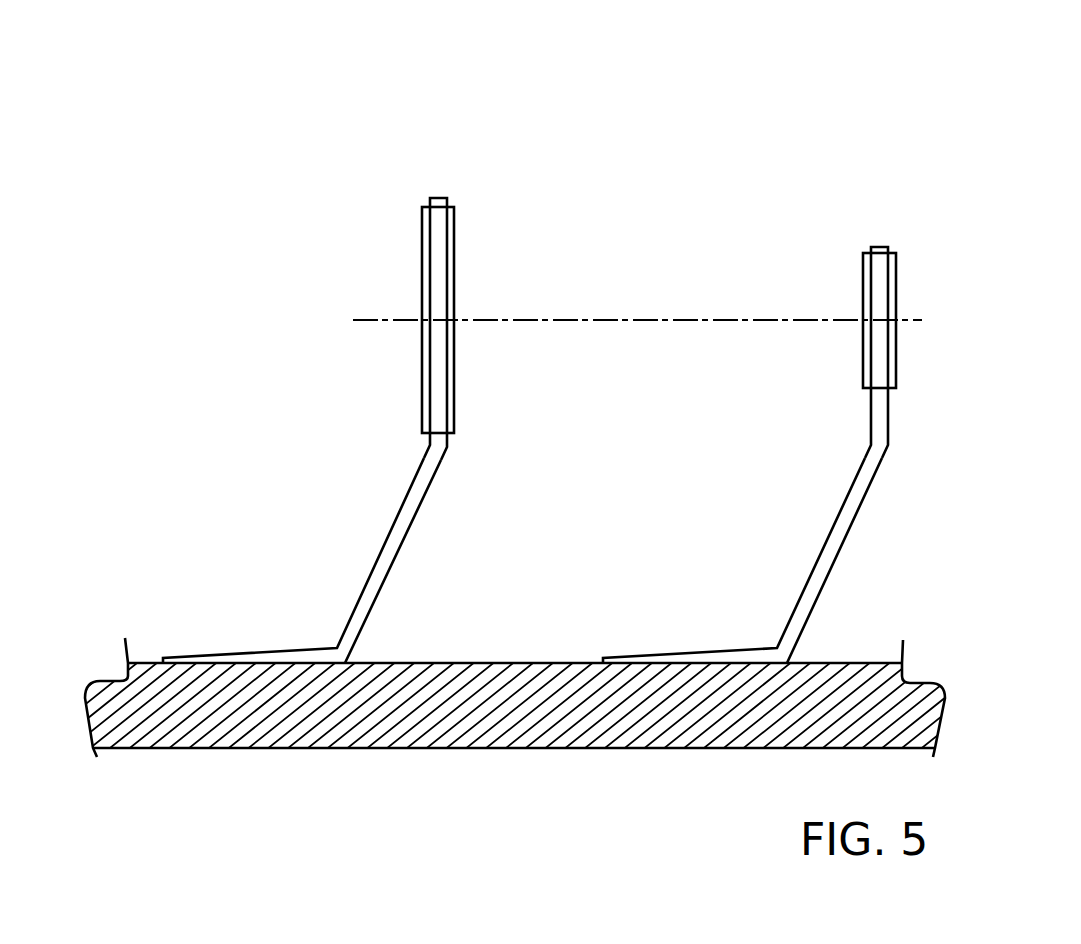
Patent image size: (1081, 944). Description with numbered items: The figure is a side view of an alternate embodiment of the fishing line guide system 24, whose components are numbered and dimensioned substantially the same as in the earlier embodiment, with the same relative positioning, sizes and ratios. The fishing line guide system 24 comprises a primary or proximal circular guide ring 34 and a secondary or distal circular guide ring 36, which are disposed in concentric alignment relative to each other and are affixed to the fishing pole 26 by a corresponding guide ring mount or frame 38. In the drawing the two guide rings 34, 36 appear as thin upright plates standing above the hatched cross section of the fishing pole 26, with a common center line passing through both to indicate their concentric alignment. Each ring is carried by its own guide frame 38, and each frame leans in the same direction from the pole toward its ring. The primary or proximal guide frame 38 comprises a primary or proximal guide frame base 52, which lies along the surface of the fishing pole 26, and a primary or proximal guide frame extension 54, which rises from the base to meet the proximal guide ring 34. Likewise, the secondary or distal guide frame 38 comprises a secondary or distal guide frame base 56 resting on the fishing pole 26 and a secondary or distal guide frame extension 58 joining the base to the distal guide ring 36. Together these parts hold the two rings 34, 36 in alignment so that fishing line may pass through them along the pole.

The fishing line guide system 24 is at (635, 162).
The fishing pole 26 is at (587, 663).
The primary or proximal circular guide ring 34 is at (422, 255).
The secondary or distal circular guide ring 36 is at (863, 291).
The guide ring mount or frame 38 is at (340, 436).
The primary or proximal guide frame base 52 is at (365, 577).
The primary or proximal guide frame extension 54 is at (442, 453).
The secondary or distal guide frame base 56 is at (832, 545).
The secondary or distal guide frame extension 58 is at (883, 425).